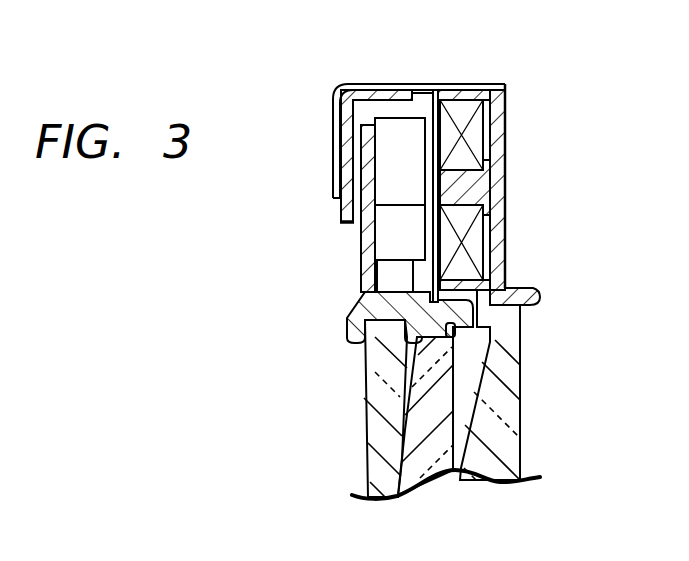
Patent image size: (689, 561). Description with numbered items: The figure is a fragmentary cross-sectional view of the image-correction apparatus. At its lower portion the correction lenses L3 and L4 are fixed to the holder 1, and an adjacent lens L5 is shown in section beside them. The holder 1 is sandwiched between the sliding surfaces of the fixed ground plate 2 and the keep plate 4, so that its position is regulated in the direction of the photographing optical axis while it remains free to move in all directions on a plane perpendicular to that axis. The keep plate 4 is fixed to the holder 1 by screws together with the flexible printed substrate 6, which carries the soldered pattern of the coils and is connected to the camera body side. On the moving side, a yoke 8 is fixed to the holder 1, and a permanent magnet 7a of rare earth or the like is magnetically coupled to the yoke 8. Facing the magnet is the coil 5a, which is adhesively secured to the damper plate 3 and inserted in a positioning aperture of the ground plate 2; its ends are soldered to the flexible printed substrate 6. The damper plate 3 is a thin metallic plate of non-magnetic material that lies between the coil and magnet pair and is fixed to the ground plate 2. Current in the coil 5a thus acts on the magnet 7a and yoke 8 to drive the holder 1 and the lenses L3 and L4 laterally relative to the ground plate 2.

The holder 1 is at (350, 317).
The fixed ground plate 2 is at (497, 215).
The damper plate 3 is at (432, 106).
The keep plate 4 is at (346, 215).
The coil 5a is at (465, 108).
The flexible printed substrate 6 is at (337, 152).
The permanent magnet 7a is at (397, 122).
The yoke 8 is at (362, 272).
The correction lens L3 is at (373, 418).
The correction lens L4 is at (430, 462).
The right leg L5 is at (507, 445).